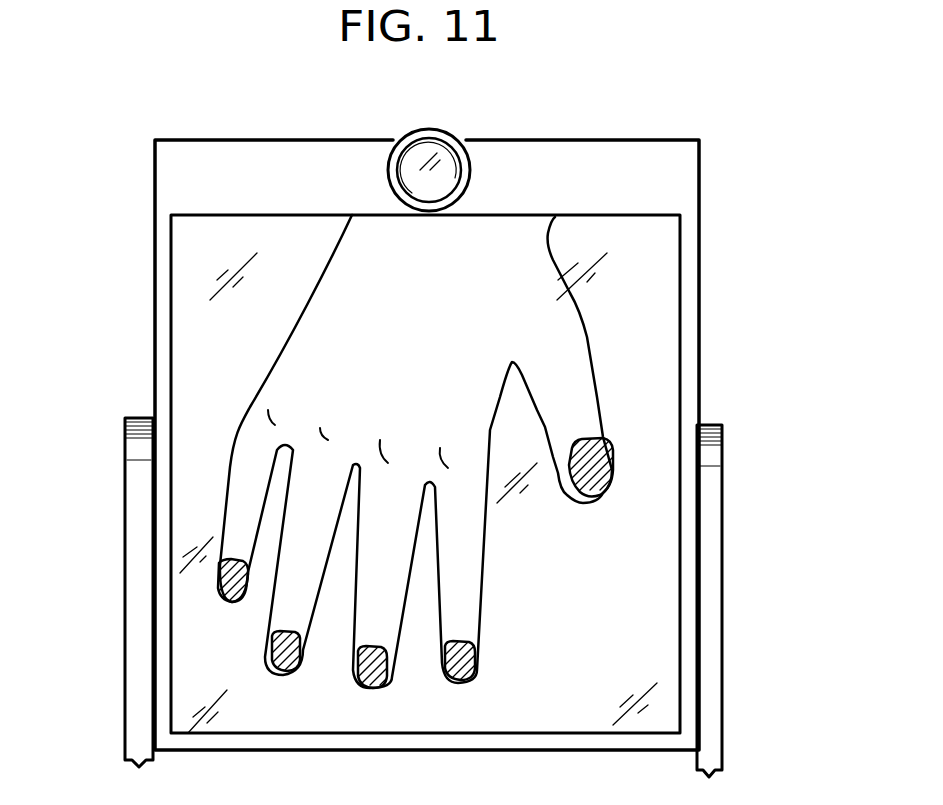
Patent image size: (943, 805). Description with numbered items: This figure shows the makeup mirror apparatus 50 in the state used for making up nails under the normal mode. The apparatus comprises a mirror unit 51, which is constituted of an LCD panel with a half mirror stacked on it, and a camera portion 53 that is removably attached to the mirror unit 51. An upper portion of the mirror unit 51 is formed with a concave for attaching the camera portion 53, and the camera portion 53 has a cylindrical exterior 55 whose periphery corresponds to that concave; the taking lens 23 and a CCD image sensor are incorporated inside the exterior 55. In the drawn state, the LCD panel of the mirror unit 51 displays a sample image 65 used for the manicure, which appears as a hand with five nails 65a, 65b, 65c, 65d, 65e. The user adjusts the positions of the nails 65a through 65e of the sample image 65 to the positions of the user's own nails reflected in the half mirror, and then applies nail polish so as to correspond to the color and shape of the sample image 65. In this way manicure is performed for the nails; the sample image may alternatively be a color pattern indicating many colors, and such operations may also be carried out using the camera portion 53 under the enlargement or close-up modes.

The makeup mirror apparatus 50 is at (442, 423).
The mirror unit 51 is at (170, 272).
The camera portion 53 is at (387, 172).
The exterior 55 is at (467, 140).
The taking lens 23 is at (445, 178).
The sample image 65 is at (555, 570).
The nail 65a is at (593, 490).
The nail 65b is at (458, 672).
The nail 65c is at (372, 677).
The nail 65d is at (282, 660).
The nail 65e is at (228, 590).